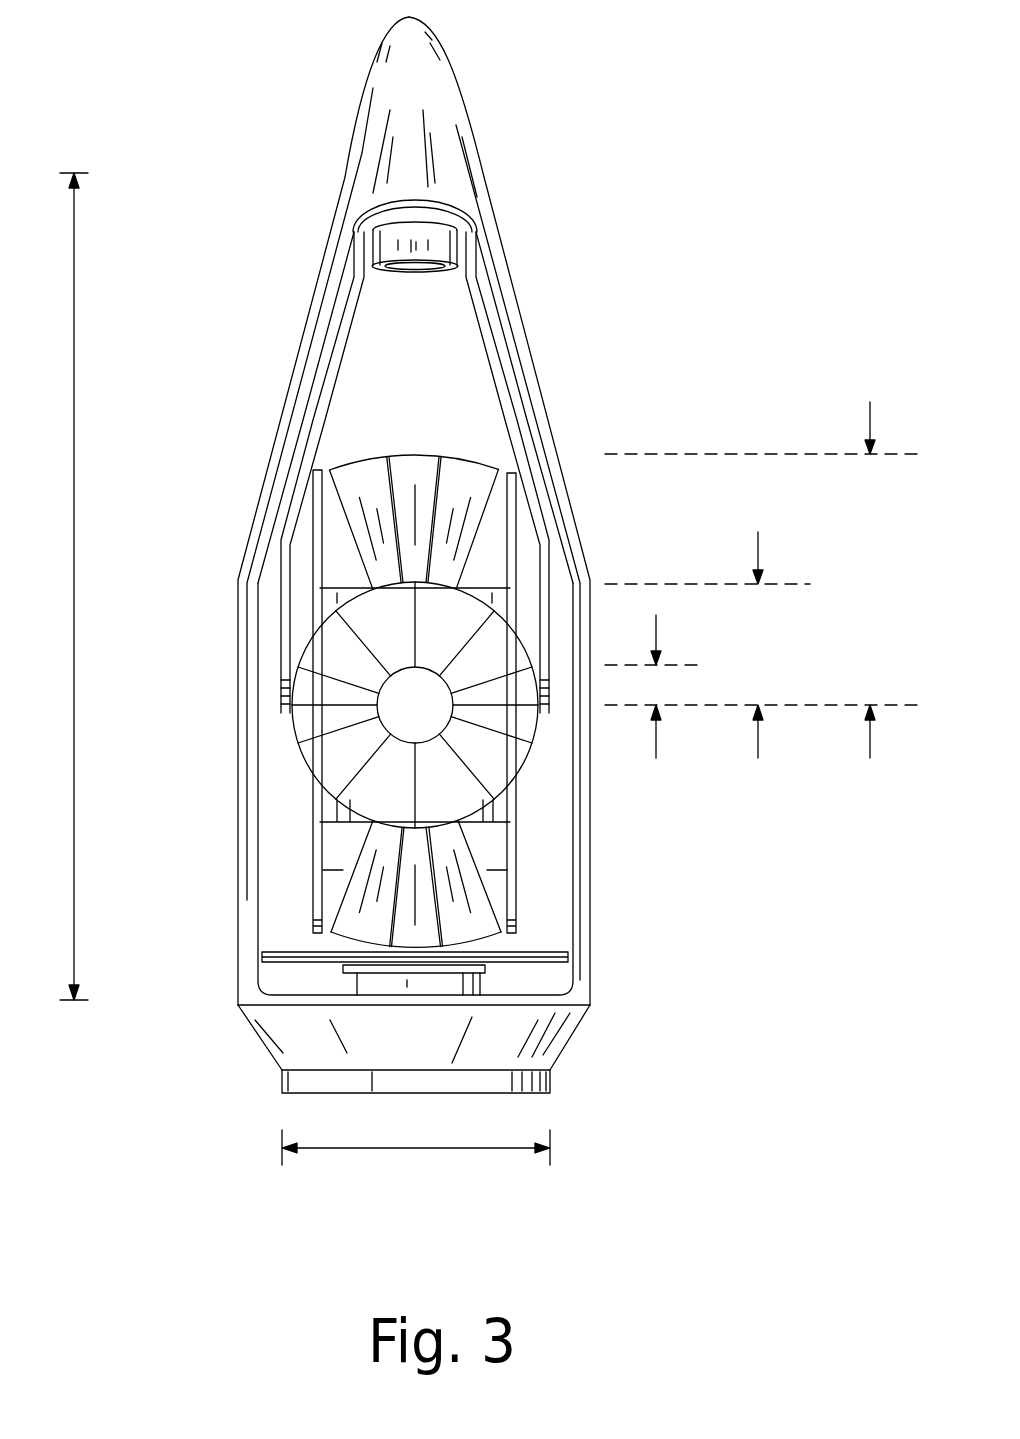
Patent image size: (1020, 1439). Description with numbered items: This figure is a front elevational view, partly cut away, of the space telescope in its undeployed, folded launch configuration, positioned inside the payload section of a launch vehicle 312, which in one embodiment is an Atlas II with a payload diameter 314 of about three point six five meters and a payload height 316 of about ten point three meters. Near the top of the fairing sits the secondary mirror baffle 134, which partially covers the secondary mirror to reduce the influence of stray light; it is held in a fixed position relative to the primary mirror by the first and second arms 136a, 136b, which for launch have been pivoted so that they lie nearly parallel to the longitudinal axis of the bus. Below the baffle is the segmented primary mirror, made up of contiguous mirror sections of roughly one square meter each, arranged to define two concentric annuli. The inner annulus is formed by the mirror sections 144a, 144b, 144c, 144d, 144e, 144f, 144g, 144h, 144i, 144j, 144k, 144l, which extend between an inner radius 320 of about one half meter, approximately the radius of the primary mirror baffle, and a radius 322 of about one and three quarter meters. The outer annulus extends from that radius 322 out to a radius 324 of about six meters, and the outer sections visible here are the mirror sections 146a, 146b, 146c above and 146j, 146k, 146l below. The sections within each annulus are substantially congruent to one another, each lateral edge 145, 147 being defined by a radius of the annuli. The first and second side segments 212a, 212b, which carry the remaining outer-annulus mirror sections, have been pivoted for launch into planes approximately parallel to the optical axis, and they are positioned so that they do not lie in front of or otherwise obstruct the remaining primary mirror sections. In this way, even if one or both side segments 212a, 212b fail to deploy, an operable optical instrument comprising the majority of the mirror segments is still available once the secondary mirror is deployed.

The secondary mirror baffle 134 is at (422, 225).
The first arm 136a is at (333, 357).
The second arm 136b is at (483, 325).
The lateral edge 147 is at (443, 478).
The outer-annulus mirror section 146a is at (477, 470).
The outer-annulus mirror section 146b is at (410, 473).
The outer-annulus mirror section 146c is at (330, 454).
The outer-annulus mirror section 146j is at (357, 912).
The outer-annulus mirror section 146k is at (403, 933).
The outer-annulus mirror section 146l is at (470, 940).
The first side segment 212a is at (313, 532).
The second side segment 212b is at (516, 540).
The inner-annulus mirror section 144a is at (460, 617).
The inner-annulus mirror section 144b is at (387, 617).
The inner-annulus mirror section 144c is at (328, 640).
The inner-annulus mirror section 144d is at (330, 690).
The inner-annulus mirror section 144e is at (302, 725).
The inner-annulus mirror section 144f is at (328, 778).
The inner-annulus mirror section 144g is at (378, 805).
The inner-annulus mirror section 144h is at (442, 805).
The inner-annulus mirror section 144i is at (498, 780).
The inner-annulus mirror section 144j is at (518, 725).
The inner-annulus mirror section 144k is at (503, 678).
The inner-annulus mirror section 144l is at (498, 648).
The lateral edge 145 is at (418, 643).
The launch vehicle 312 is at (575, 953).
The payload diameter 314 is at (365, 1162).
The payload height 316 is at (76, 285).
The inner radius 320 is at (692, 782).
The radius 322 is at (794, 782).
The radius 324 is at (906, 782).